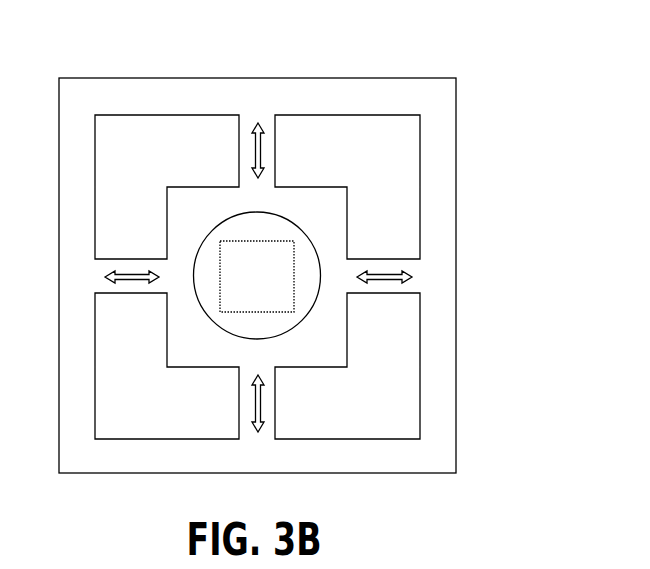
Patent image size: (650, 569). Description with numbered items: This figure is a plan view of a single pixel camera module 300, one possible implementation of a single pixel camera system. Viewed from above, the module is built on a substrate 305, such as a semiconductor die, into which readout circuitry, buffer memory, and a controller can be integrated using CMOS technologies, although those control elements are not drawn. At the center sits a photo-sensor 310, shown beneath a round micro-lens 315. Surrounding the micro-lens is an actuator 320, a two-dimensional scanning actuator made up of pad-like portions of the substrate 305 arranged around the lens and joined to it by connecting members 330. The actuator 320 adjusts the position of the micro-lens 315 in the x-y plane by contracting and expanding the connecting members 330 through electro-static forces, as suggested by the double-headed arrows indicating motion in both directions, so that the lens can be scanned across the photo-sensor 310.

The single pixel camera module 300 is at (521, 58).
The substrate 305 is at (404, 142).
The photo-sensor 310 is at (272, 286).
The micro-lens 315 is at (221, 226).
The actuator 320 is at (153, 106).
The connecting members 330 is at (275, 177).